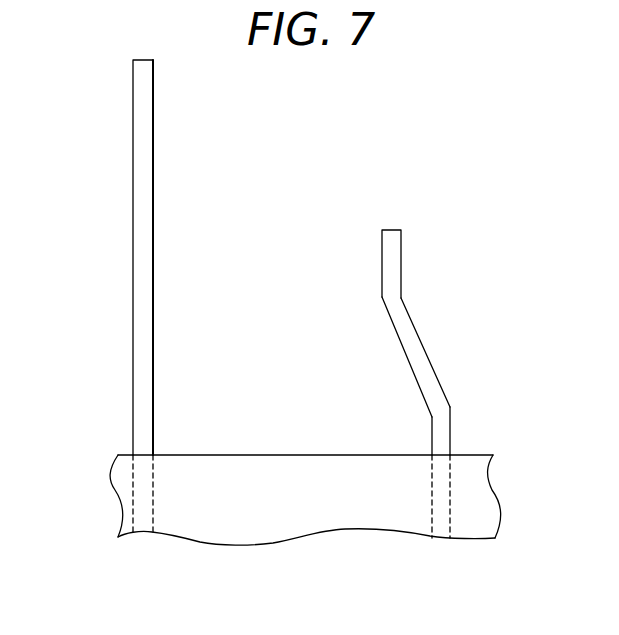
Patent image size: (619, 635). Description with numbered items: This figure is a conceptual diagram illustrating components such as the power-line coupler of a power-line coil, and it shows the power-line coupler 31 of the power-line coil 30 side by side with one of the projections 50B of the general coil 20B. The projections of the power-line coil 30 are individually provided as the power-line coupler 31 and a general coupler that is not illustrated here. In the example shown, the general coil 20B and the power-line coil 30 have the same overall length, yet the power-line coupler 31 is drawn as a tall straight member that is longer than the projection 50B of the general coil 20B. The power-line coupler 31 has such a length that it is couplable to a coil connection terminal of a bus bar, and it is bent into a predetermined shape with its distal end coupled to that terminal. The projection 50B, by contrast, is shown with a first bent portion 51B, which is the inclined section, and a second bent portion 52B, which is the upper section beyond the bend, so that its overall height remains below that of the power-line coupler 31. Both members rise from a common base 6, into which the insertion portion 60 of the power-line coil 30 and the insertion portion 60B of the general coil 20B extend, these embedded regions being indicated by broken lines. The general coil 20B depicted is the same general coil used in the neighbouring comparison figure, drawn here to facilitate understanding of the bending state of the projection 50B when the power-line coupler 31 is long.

The base 6 is at (485, 507).
The power-line coil 30 is at (129, 257).
The power-line coupler 31 is at (145, 250).
The insertion portion 60 is at (153, 497).
The general coil 20B is at (481, 324).
The second bent portion 52B is at (393, 255).
The first bent portion 51B is at (412, 328).
The projection 50B is at (447, 430).
The insertion portion 60B is at (432, 488).